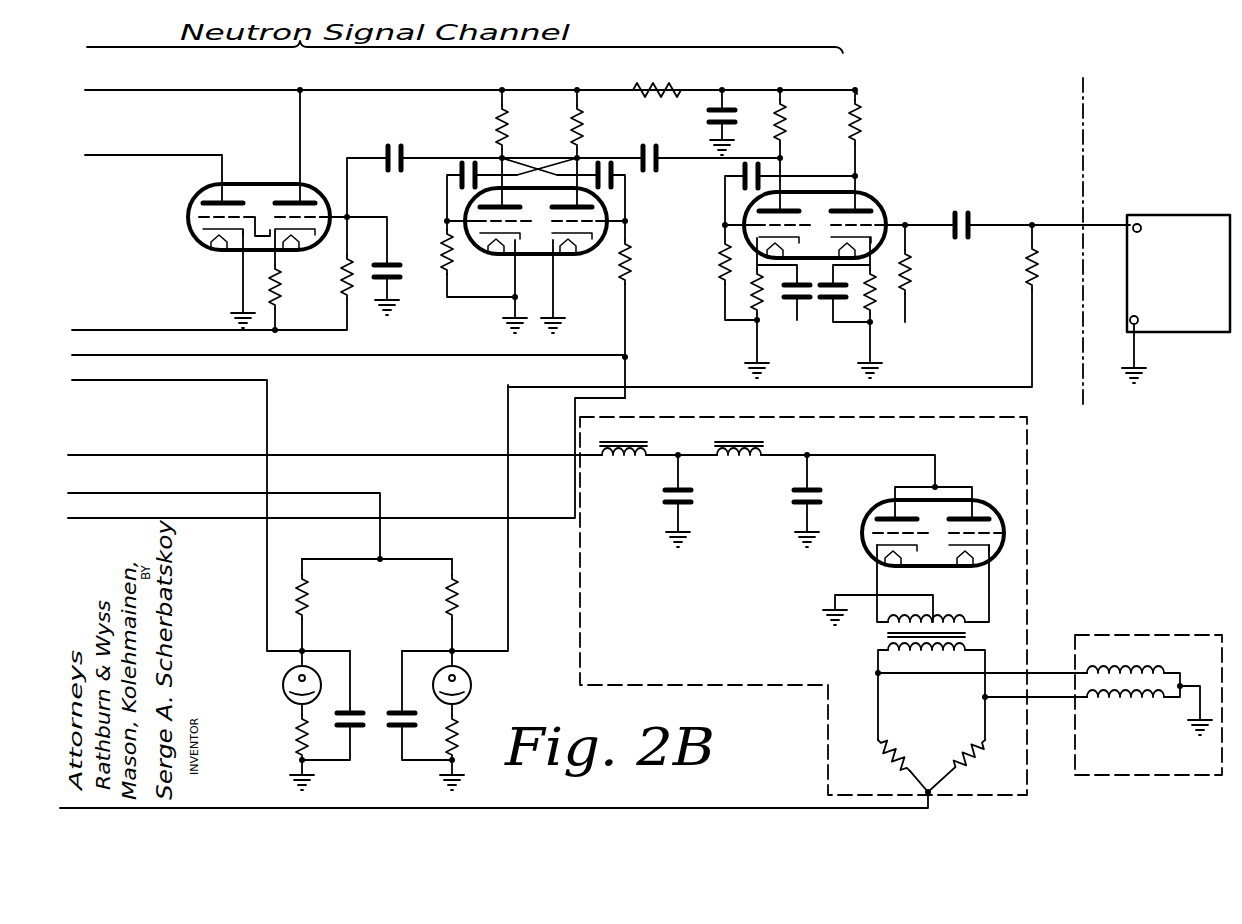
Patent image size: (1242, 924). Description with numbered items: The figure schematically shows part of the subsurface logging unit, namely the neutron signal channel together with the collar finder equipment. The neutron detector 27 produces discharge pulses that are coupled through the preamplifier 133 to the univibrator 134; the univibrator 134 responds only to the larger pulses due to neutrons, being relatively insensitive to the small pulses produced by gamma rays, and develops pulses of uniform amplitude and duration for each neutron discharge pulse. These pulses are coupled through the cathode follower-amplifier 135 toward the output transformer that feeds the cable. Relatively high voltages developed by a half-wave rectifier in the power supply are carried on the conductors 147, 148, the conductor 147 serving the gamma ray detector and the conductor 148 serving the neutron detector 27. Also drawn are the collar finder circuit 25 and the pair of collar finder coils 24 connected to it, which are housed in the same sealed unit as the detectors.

The cathode follower-amplifier 135 is at (432, 87).
The univibrator 134 is at (650, 87).
The preamplifier 133 is at (858, 87).
The neutron detector 27 is at (1182, 322).
The conductor 147 is at (280, 548).
The conductor 148 is at (508, 552).
The collar finder circuit 25 is at (833, 606).
The collar finder coils 24 is at (1148, 705).